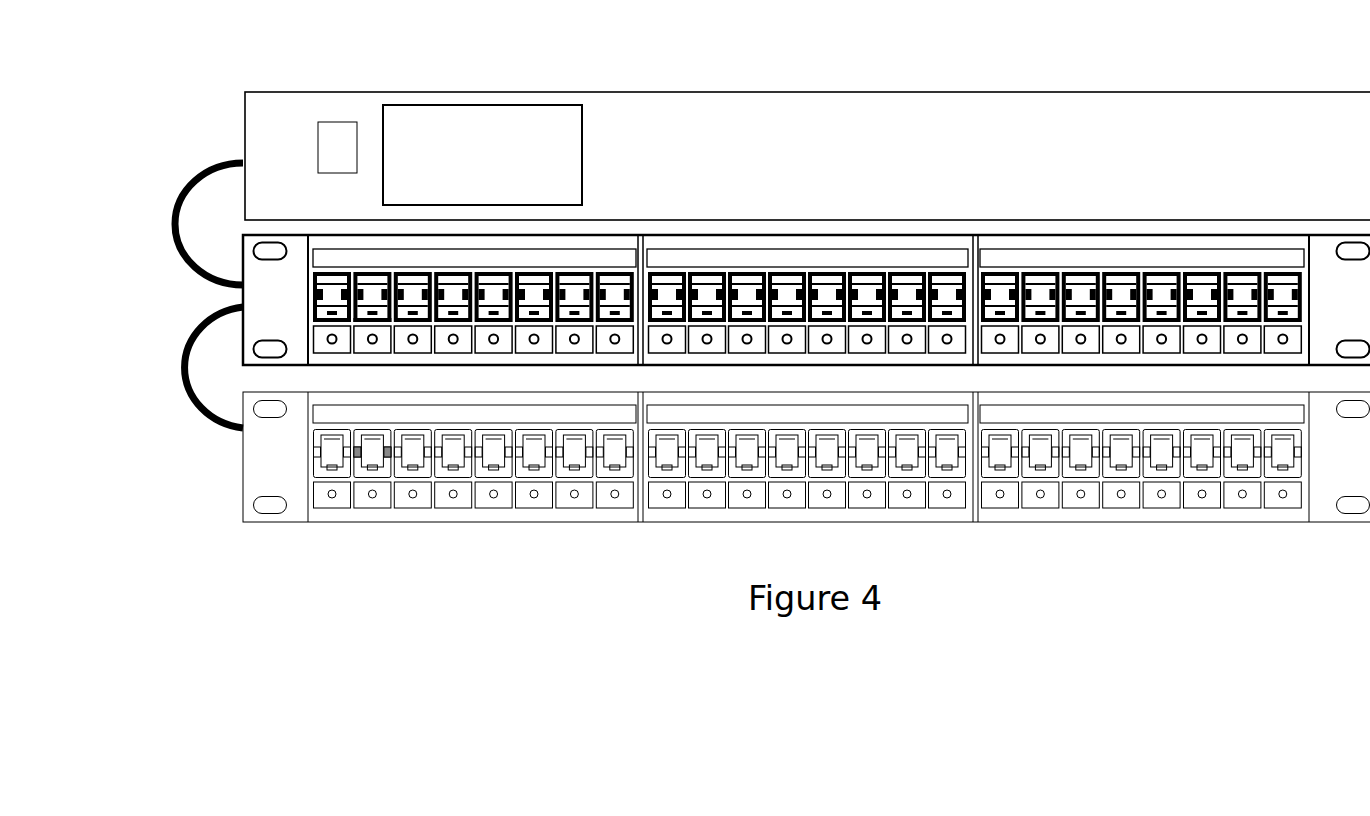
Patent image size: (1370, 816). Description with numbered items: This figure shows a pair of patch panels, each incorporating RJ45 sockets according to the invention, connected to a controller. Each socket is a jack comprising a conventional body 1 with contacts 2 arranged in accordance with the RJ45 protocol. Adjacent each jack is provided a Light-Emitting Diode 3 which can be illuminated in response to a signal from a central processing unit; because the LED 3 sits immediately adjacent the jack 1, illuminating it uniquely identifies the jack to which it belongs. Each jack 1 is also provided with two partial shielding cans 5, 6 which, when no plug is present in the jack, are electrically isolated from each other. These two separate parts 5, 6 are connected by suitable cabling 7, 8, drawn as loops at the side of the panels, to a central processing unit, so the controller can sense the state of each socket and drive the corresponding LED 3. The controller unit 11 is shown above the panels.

The body 1 is at (485, 315).
The contacts 2 is at (373, 288).
The Light-Emitting Diode (LED) 3 is at (1078, 495).
The partial shielding can 5 is at (352, 322).
The partial shielding can 6 is at (393, 322).
The cabling 7 is at (167, 239).
The cabling 8 is at (176, 332).
The patch panel housing 11 is at (727, 159).